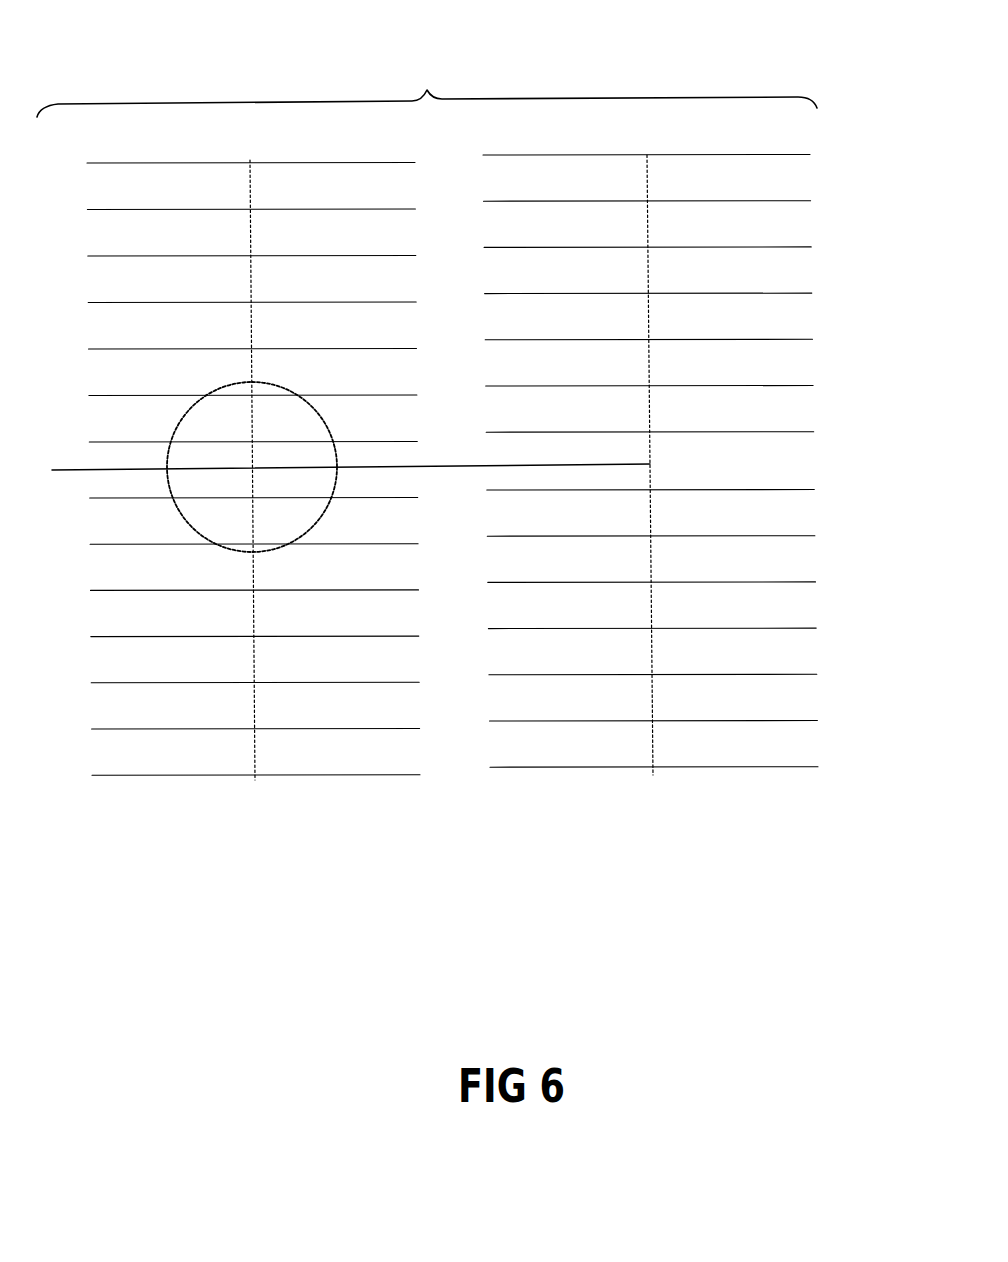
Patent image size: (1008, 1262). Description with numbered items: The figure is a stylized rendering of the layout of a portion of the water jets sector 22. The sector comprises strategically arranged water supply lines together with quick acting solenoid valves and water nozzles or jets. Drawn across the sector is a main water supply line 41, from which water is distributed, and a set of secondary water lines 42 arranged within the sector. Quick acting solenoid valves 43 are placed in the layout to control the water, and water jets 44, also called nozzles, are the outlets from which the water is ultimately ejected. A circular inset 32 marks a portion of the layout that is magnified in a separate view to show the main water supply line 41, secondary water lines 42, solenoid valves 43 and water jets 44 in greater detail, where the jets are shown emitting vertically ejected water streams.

The water jets sector 22 is at (423, 95).
The inset 32 is at (322, 517).
The main water supply line 41 is at (435, 468).
The secondary water lines 42 is at (653, 363).
The solenoid valves 43 is at (263, 780).
The water jets 44 is at (150, 780).